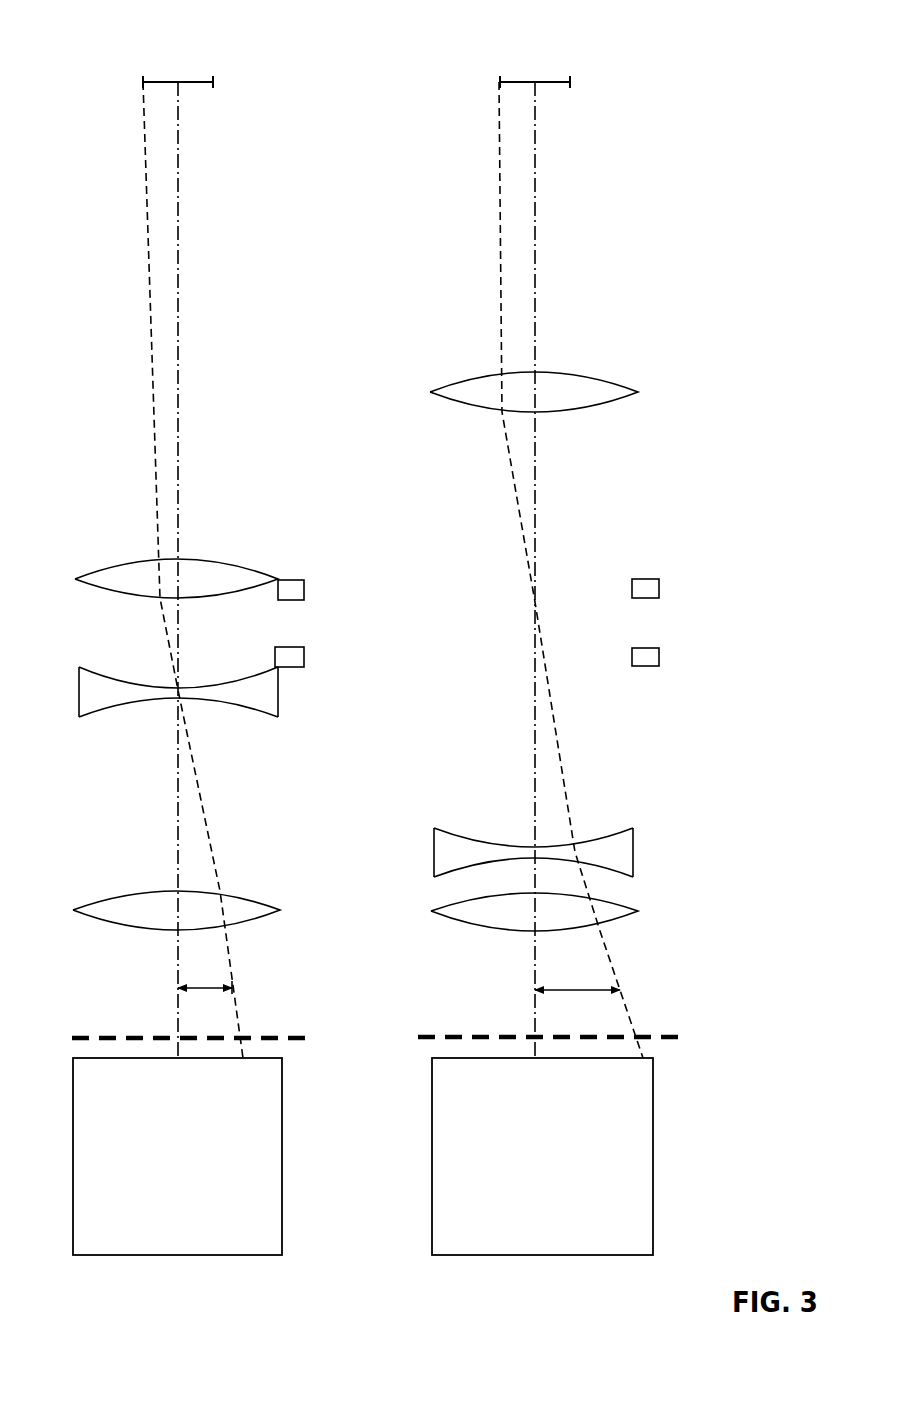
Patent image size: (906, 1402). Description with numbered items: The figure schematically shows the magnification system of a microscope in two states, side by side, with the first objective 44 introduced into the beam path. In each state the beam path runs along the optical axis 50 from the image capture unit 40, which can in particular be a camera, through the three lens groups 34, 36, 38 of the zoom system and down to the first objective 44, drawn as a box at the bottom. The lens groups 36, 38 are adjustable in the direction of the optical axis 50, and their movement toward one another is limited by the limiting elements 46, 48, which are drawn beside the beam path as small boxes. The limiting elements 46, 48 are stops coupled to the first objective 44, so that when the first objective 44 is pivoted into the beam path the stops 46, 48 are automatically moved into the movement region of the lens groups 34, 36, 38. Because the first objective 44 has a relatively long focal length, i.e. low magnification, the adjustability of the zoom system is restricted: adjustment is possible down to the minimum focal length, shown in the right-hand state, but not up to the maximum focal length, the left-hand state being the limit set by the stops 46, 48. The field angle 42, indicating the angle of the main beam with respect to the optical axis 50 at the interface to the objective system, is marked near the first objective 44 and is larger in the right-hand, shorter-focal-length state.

The lens group 34 is at (110, 908).
The lens group 36 is at (95, 700).
The lens group 38 is at (118, 577).
The image capture unit 40 is at (198, 80).
The field angle 42 is at (207, 985).
The first objective 44 is at (188, 1243).
The limiting element 46 is at (304, 590).
The limiting element 48 is at (304, 657).
The optical axis 50 is at (178, 233).